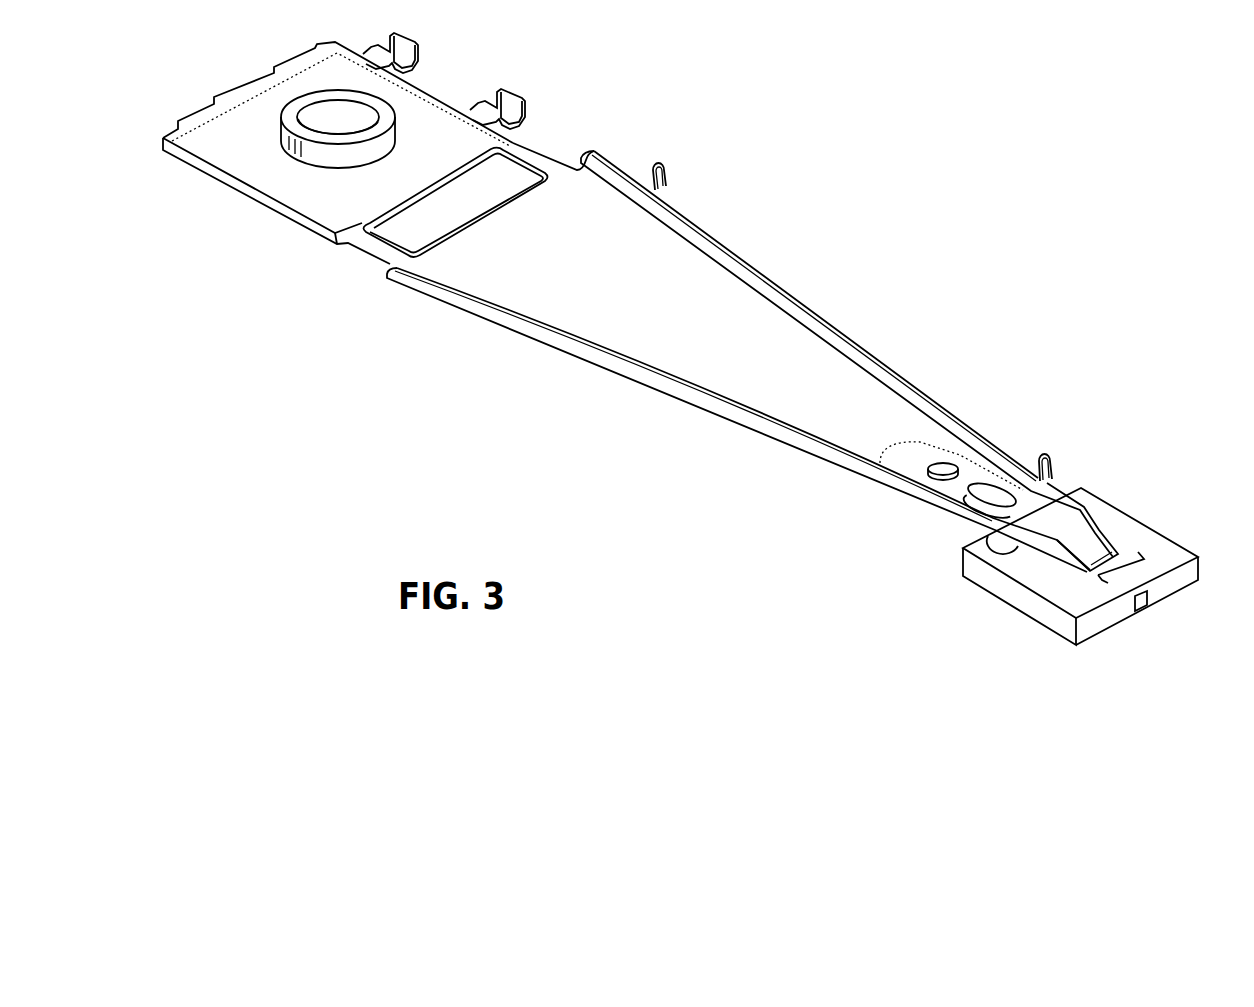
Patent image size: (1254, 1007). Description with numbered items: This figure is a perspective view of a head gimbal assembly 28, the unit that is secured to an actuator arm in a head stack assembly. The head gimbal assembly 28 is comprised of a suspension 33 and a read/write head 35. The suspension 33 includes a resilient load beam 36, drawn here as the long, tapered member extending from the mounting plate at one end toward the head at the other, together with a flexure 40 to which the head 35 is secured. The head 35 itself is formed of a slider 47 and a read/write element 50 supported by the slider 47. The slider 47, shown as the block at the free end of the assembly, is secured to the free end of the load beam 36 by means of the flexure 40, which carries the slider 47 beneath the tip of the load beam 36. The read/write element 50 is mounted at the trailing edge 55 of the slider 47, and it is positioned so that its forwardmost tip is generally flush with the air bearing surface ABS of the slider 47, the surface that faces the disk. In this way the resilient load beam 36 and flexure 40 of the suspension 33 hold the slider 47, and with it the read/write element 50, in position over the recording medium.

The head gimbal assembly 28 is at (780, 152).
The suspension 33 is at (943, 387).
The read/write head 35 is at (1102, 485).
The load beam 36 is at (768, 334).
The flexure 40 is at (988, 535).
The slider 47 is at (1137, 514).
The read/write element 50 is at (1142, 612).
The trailing edge 55 is at (1203, 577).
The air bearing surface ABS is at (1100, 635).